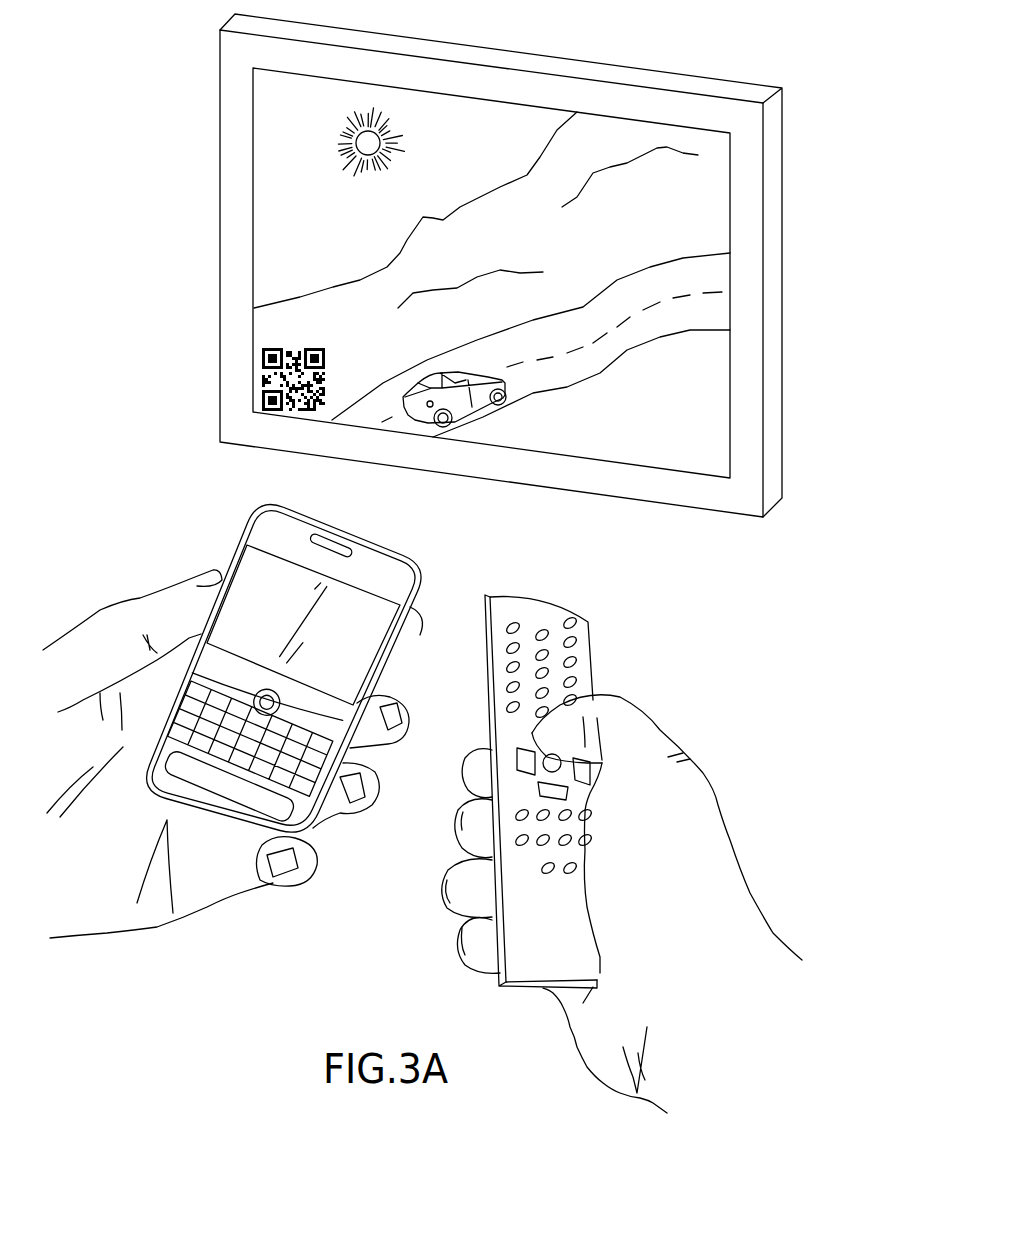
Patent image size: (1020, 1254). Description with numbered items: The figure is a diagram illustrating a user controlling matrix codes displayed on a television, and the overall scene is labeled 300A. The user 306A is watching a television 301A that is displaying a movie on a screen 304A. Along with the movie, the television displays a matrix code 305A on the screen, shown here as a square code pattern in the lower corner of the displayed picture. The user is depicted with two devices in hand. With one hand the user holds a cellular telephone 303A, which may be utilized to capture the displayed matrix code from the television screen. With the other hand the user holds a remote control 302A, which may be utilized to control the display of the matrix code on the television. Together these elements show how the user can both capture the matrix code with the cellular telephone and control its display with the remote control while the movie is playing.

The media environment 300A is at (279, 976).
The television 301A is at (218, 41).
The remote control 302A is at (592, 632).
The cellular telephone 303A is at (247, 525).
The screen 304A is at (270, 151).
The matrix code 305A is at (262, 350).
The user 306A is at (73, 637).